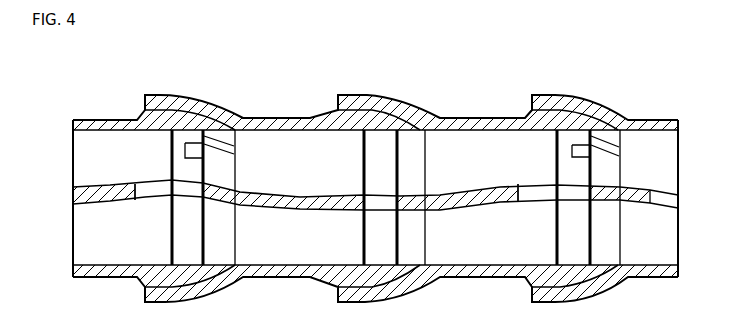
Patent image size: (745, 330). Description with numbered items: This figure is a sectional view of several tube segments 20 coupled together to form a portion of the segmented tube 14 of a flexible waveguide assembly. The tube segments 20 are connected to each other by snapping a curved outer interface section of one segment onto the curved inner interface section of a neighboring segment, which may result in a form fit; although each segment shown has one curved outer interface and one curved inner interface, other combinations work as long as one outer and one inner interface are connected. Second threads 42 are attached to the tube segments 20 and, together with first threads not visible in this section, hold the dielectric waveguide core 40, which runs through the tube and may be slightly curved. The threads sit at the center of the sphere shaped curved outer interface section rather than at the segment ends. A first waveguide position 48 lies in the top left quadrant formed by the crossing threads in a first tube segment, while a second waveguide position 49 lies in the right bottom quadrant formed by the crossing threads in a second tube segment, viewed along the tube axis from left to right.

The segmented tube 14 is at (436, 84).
The tube segment 20 is at (407, 95).
The dielectric waveguide core 40 is at (291, 199).
The second threads 42 is at (170, 252).
The first waveguide position 48 is at (170, 203).
The second waveguide position 49 is at (362, 212).